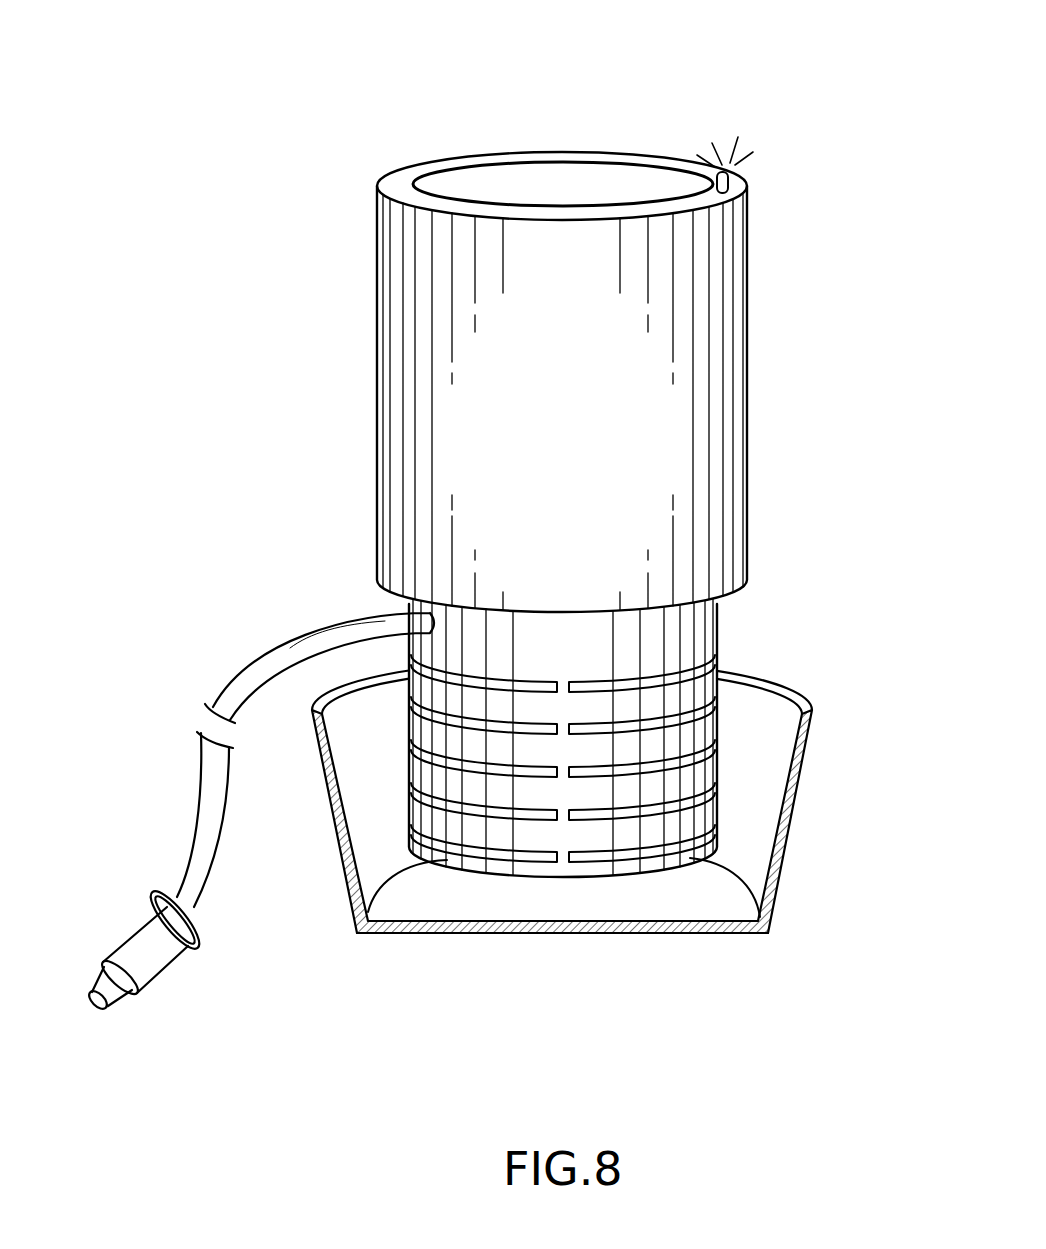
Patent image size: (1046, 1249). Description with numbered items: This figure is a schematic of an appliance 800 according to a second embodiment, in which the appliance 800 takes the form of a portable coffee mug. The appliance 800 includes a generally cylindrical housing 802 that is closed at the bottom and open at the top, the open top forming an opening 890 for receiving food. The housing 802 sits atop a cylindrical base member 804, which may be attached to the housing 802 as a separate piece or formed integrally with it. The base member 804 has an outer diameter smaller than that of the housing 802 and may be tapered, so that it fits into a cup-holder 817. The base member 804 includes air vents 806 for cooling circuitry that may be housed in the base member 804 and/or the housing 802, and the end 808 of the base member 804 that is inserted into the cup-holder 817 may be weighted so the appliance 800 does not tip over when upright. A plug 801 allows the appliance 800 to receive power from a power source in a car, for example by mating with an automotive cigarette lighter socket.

The appliance 800 is at (346, 86).
The housing 802 is at (774, 320).
The opening 890 is at (549, 186).
The base member 804 is at (726, 700).
The air vents 806 is at (451, 855).
The end of base member 808 is at (684, 871).
The cup-holder 817 is at (605, 937).
The plug 801 is at (128, 921).